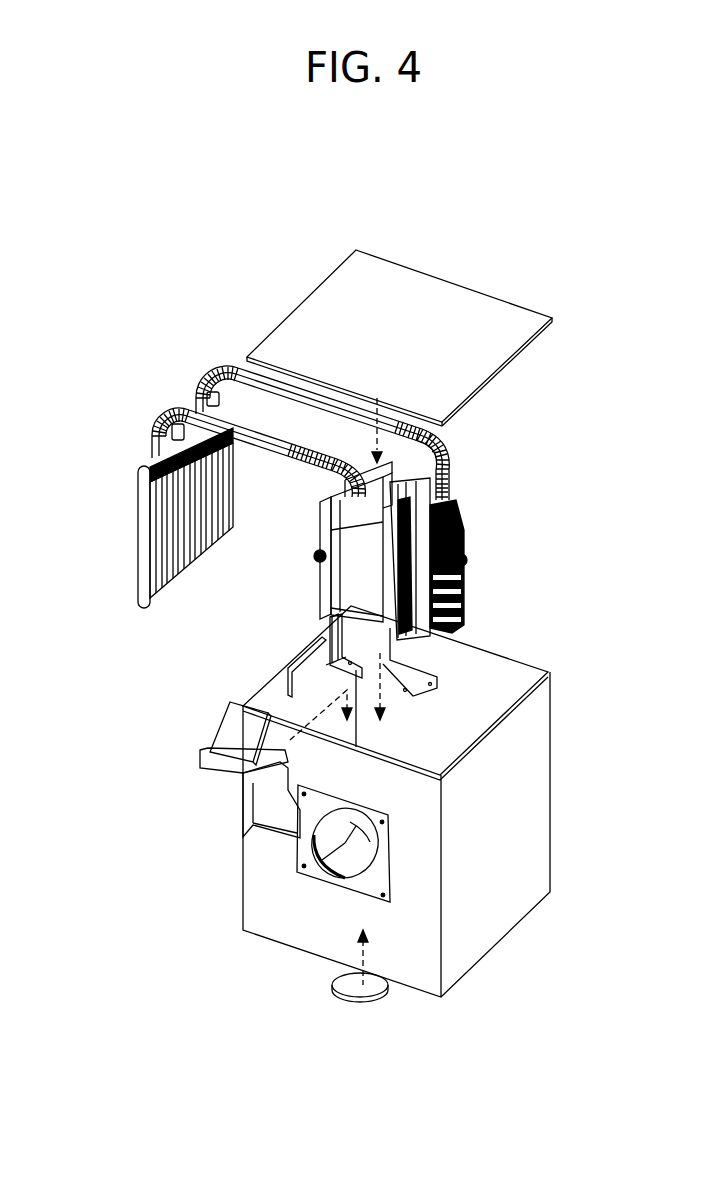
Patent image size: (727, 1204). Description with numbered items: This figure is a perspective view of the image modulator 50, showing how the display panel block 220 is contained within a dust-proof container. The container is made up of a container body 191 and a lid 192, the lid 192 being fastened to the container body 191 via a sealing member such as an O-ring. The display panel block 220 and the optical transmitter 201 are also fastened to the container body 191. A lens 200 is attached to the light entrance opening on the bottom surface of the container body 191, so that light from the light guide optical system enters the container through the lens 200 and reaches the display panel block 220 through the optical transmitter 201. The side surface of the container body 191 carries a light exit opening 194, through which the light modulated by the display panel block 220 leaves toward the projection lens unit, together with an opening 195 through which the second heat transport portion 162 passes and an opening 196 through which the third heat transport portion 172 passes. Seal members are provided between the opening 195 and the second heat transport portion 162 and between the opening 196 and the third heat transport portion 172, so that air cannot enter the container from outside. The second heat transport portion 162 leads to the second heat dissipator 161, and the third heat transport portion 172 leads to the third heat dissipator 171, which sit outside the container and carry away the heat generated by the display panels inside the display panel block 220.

The image modulator 50 is at (394, 191).
The lid 192 is at (490, 322).
The second heat transport portion 162 is at (253, 375).
The third heat transport portion 172 is at (195, 405).
The third heat dissipator 171 is at (151, 500).
The second heat dissipator 161 is at (222, 528).
The display panel block 220 is at (471, 413).
The opening 195 is at (327, 632).
The opening 196 is at (290, 670).
The optical transmitter 201 is at (238, 733).
The light exit opening 194 is at (360, 856).
The container body 191 is at (263, 900).
The lens 200 is at (348, 986).